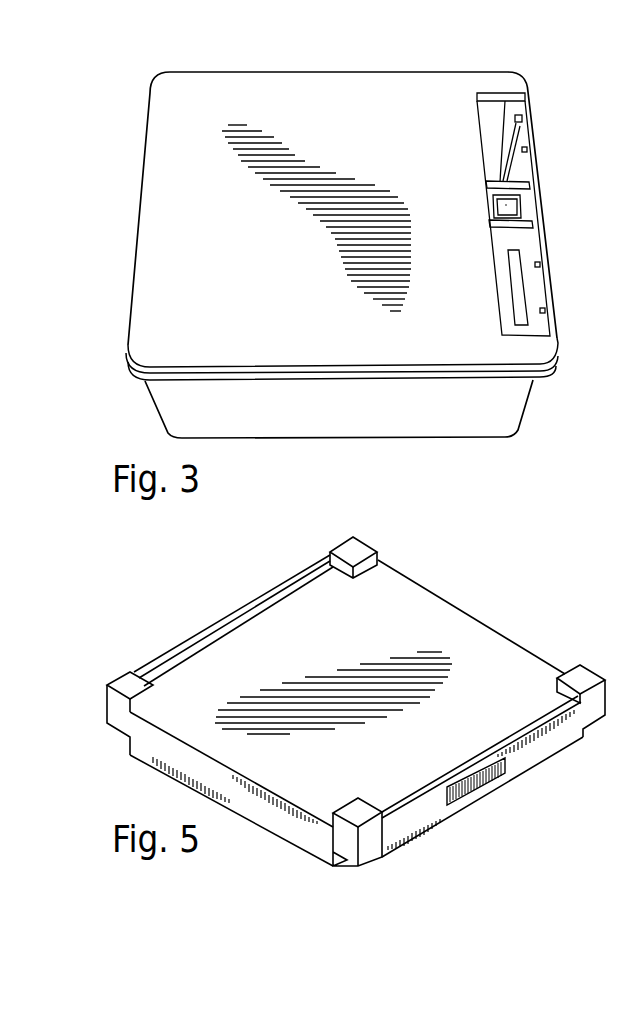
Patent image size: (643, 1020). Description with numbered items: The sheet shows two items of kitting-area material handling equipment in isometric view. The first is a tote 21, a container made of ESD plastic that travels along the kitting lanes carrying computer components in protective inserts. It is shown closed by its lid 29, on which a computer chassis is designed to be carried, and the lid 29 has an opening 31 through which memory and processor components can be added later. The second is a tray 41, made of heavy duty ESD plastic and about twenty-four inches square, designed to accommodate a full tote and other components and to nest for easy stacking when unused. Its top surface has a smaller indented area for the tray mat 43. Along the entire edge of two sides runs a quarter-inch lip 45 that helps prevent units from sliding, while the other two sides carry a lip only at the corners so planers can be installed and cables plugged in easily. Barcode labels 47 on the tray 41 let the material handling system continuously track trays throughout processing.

In FIG. 3, the tote 21 is at (135, 91).
In FIG. 3, the lid 29 is at (148, 278).
In FIG. 3, the opening 31 is at (492, 132).
In FIG. 5, the tray 41 is at (180, 598).
In FIG. 5, the tray mat 43 is at (182, 731).
In FIG. 5, the lip 45 is at (278, 587).
In FIG. 5, the barcode labels 47 is at (482, 779).